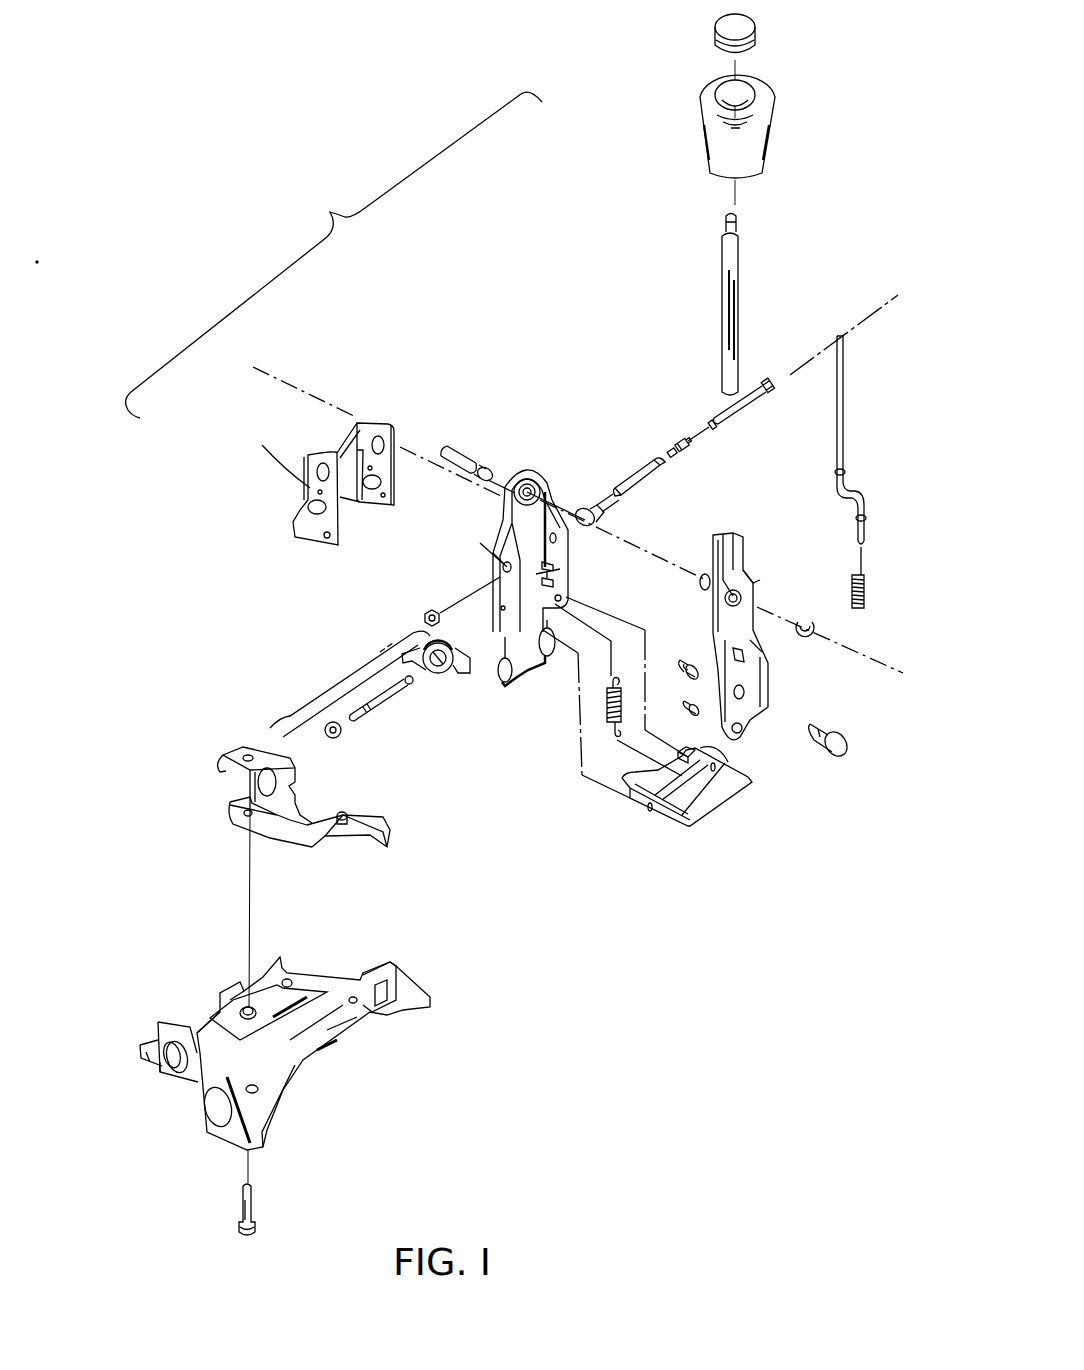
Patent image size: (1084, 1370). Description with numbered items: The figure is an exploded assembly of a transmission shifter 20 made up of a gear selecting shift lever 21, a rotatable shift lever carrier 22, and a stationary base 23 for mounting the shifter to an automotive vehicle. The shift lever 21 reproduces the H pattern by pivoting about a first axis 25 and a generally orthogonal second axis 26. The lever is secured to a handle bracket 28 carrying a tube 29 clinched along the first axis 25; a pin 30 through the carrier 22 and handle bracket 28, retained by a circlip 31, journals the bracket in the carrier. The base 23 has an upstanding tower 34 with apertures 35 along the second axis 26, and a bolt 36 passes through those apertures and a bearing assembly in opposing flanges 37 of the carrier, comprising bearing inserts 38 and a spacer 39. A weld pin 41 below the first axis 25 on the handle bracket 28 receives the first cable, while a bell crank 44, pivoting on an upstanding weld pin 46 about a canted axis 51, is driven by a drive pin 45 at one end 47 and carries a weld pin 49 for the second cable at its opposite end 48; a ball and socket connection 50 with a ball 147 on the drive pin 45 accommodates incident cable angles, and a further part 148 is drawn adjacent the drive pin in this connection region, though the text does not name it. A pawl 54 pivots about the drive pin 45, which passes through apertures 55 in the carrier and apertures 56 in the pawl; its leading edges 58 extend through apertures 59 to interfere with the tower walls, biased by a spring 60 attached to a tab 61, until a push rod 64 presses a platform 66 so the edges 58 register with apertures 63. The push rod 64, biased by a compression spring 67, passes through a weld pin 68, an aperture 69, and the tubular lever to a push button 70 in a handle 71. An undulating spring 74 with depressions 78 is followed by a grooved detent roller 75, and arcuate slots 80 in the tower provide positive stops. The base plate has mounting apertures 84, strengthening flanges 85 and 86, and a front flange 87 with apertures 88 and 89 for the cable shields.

The shifter 20 is at (330, 212).
The gear selecting shift lever 21 is at (733, 268).
The rotatable shift lever carrier 22 is at (568, 601).
The stationary base 23 is at (268, 1050).
The first axis 25 is at (325, 402).
The second axis 26 is at (338, 684).
The handle bracket 28 is at (741, 620).
The tube 29 is at (740, 592).
The pin 30 is at (463, 452).
The circlip 31 is at (806, 640).
The tower 34 is at (297, 515).
The apertures 35 is at (372, 442).
The bolt 36 is at (749, 404).
The opposing flanges 37 is at (577, 550).
The bearing inserts 38 is at (680, 456).
The spacer 39 is at (635, 482).
The weld pin 41 is at (684, 708).
The bell crank 44 is at (300, 842).
The drive pin 45 is at (383, 705).
The weld pin 46 is at (255, 1198).
The one end 47 is at (288, 796).
The opposite end 48 is at (368, 826).
The weld pin 49 is at (348, 815).
The ball and socket connection 50 is at (328, 795).
The axis 51 is at (248, 885).
The pawl 54 is at (697, 795).
The apertures 55 is at (628, 592).
The apertures 56 is at (711, 771).
The leading edges 58 is at (622, 778).
The apertures 59 is at (495, 582).
The spring 60 is at (607, 708).
The tab 61 is at (730, 755).
The apertures 63 is at (300, 483).
The push rod 64 is at (845, 426).
The platform 66 is at (720, 795).
The compression spring 67 is at (866, 592).
The weld pin 68 is at (840, 752).
The aperture 69 is at (750, 648).
The push button 70 is at (745, 26).
The handle 71 is at (737, 132).
The undulating spring 74 is at (522, 682).
The grooved detent roller 75 is at (684, 665).
The depressions 78 is at (547, 667).
The arcuate slots 80 is at (373, 485).
The apertures 84 is at (290, 978).
The flange 85 is at (355, 1035).
The flange 86 is at (212, 1015).
The flange 87 is at (200, 1080).
The aperture 88 is at (172, 1057).
The aperture 89 is at (218, 1112).
The ball 147 is at (340, 738).
The cam 148 is at (445, 676).